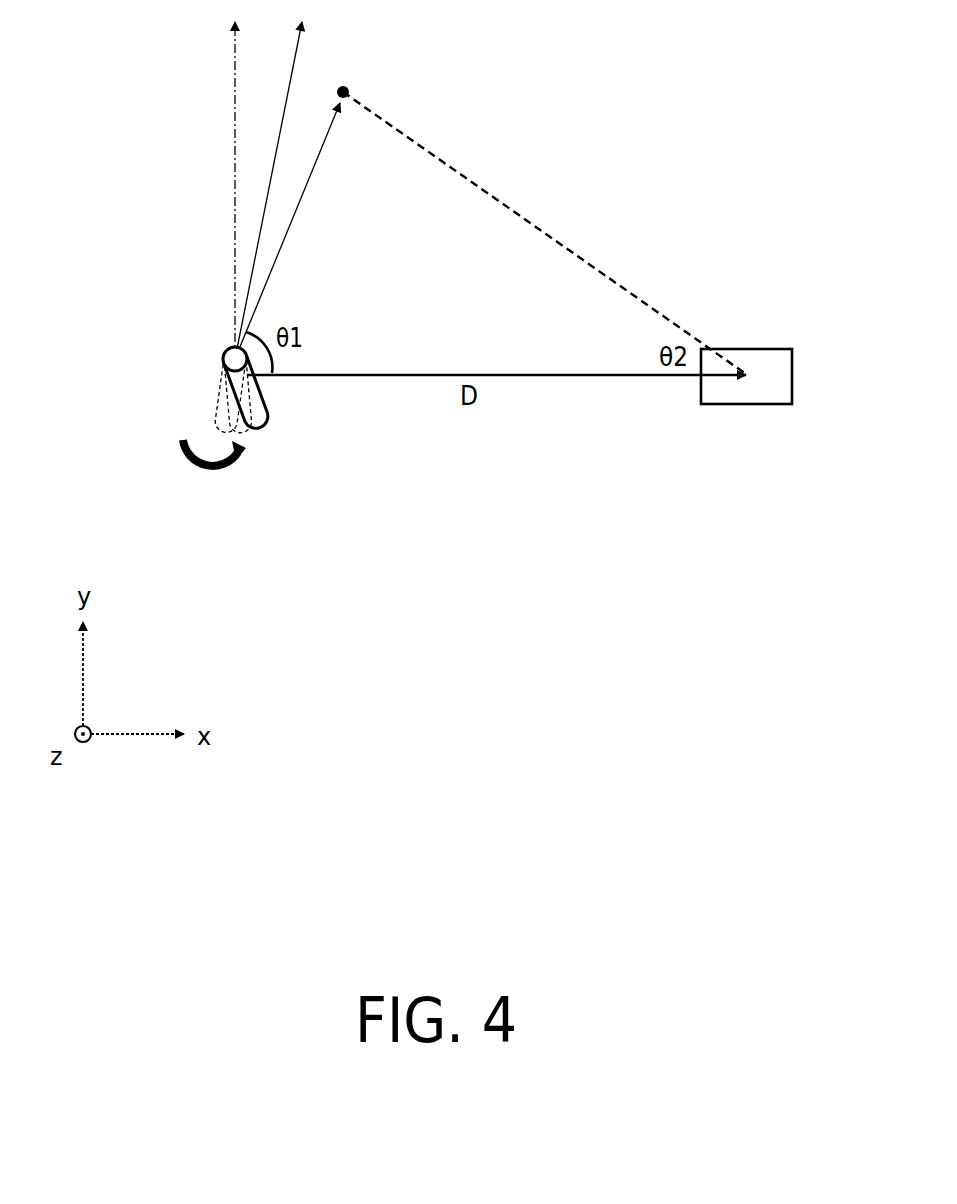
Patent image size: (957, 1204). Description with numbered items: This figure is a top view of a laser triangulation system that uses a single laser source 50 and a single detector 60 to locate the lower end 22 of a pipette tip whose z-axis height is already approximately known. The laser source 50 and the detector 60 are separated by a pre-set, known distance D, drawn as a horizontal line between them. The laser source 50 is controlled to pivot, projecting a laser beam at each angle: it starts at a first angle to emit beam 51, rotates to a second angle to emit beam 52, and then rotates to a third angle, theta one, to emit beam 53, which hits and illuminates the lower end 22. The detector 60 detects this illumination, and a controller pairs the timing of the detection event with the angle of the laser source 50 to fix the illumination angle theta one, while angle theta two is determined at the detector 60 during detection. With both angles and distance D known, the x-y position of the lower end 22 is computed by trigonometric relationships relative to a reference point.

The lower end of pipette tip 22 is at (346, 88).
The laser source 50 is at (196, 405).
The beam 51 is at (231, 288).
The beam 52 is at (258, 234).
The beam 53 is at (306, 199).
The detector 60 is at (747, 404).